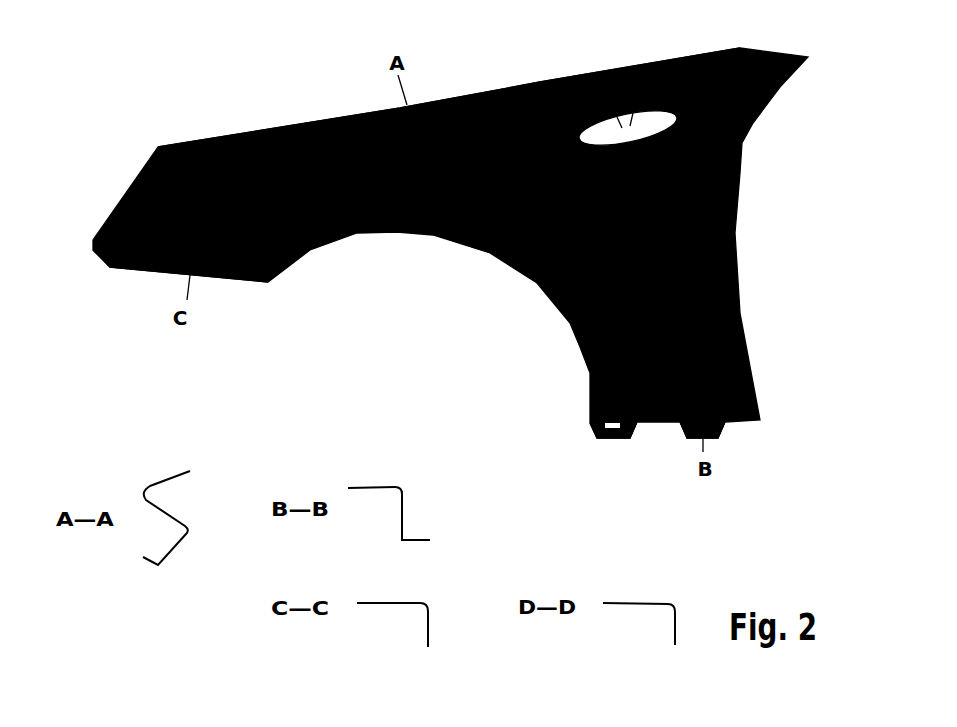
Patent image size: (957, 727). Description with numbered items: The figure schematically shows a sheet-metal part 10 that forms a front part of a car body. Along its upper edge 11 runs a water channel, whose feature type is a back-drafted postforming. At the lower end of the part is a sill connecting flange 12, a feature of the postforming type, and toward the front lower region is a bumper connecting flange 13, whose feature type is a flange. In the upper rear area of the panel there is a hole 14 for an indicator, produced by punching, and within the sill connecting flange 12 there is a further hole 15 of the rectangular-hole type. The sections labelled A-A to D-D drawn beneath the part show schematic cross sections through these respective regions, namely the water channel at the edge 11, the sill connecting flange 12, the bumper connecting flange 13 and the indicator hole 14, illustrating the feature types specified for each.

The fender 10 is at (428, 285).
The edge 11 is at (472, 93).
The sill connecting flange 12 is at (720, 437).
The bumper connecting flange 13 is at (220, 280).
The hole for an indicator 14 is at (629, 66).
The hole in the sill connecting flange 15 is at (603, 428).